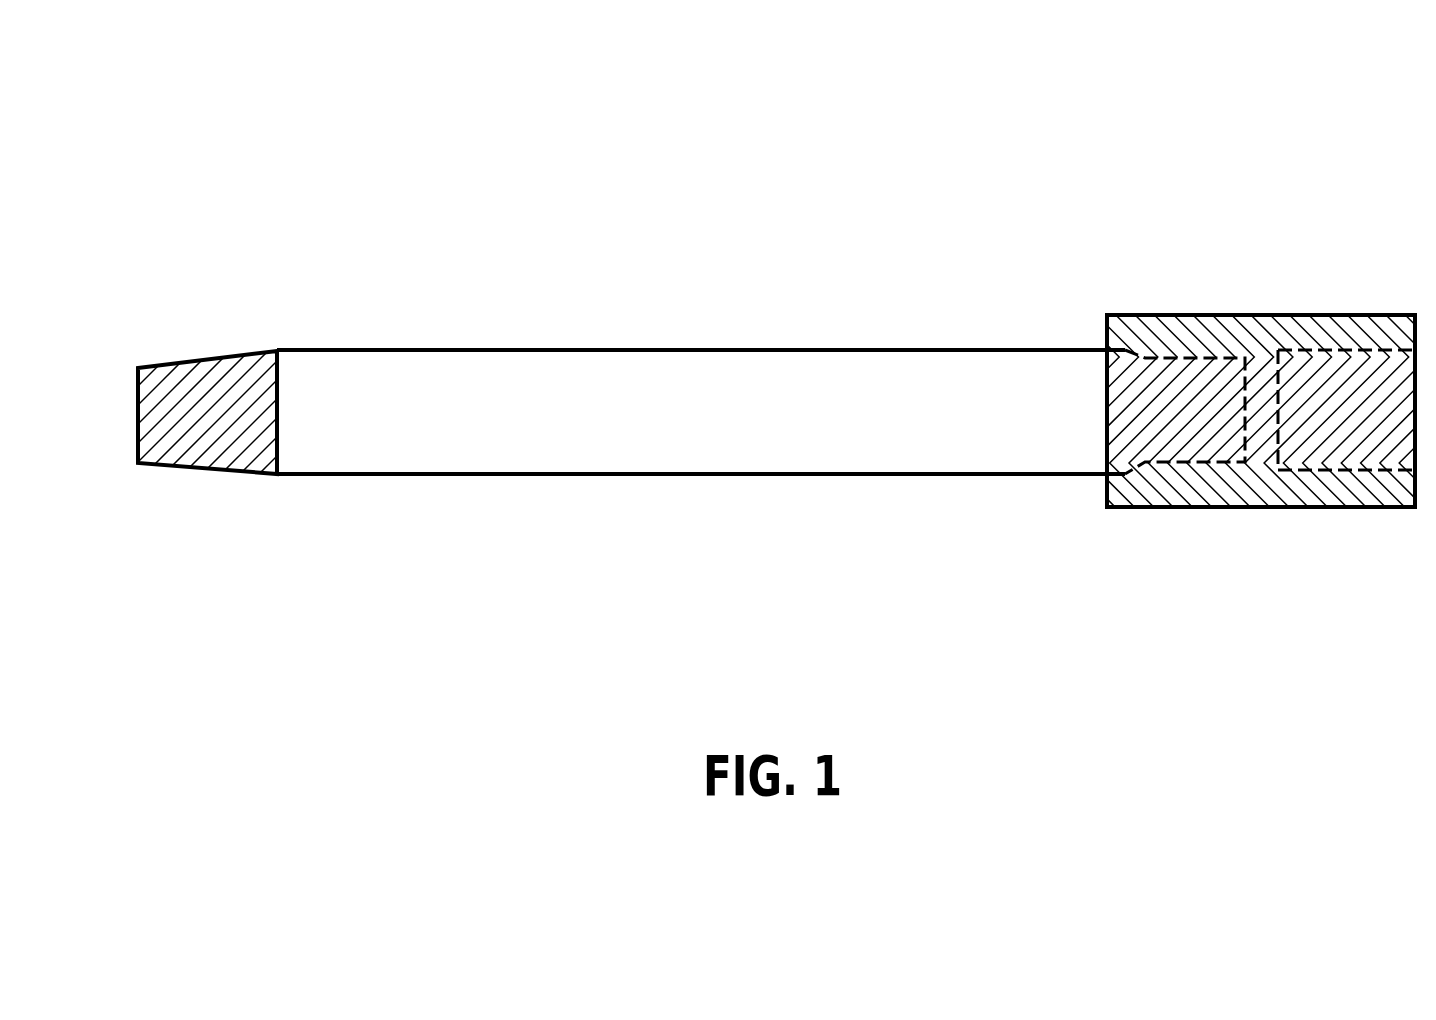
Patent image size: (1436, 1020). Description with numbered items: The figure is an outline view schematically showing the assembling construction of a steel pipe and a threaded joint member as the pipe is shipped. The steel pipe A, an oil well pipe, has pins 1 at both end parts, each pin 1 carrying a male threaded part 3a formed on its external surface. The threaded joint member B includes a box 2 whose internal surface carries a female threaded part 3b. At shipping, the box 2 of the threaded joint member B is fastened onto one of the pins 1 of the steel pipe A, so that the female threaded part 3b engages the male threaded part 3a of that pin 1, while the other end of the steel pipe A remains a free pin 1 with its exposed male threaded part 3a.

The pin 1 is at (222, 318).
The box 2 is at (1178, 280).
The male threaded part 3a is at (168, 363).
The female threaded part 3b is at (1143, 470).
The steel pipe A is at (747, 238).
The threaded joint member B is at (1308, 232).